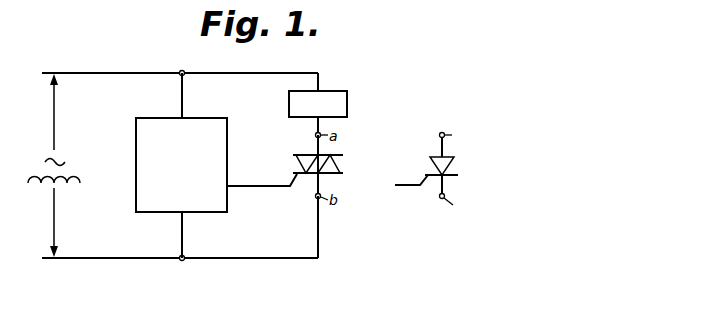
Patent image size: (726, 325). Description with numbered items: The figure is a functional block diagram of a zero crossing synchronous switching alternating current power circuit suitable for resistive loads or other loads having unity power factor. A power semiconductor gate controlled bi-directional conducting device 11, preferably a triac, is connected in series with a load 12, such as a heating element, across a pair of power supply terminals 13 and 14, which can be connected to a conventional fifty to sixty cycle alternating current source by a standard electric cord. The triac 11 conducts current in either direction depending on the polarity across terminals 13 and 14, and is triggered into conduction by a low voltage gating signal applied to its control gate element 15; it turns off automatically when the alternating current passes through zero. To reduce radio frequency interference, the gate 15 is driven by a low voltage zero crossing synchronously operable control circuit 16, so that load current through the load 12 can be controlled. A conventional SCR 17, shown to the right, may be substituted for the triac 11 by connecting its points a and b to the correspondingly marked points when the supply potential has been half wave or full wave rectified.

The gate controlled bi-directional conducting device 11 is at (342, 174).
The load 12 is at (347, 101).
The power supply terminal 13 is at (239, 250).
The power supply terminal 14 is at (181, 72).
The control gate element 15 is at (296, 188).
The synchronously operable control circuit 16 is at (136, 122).
The SCR 17 is at (452, 179).